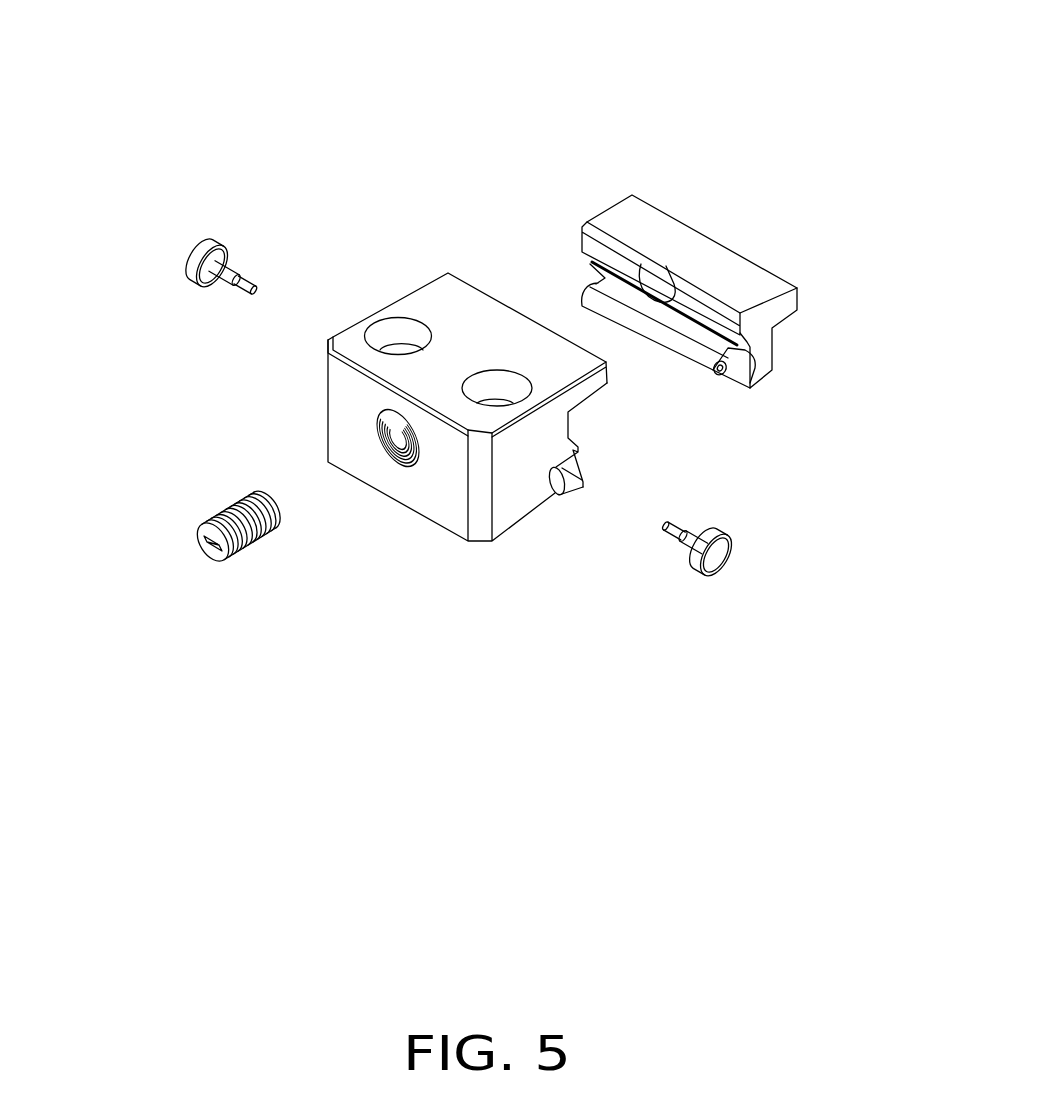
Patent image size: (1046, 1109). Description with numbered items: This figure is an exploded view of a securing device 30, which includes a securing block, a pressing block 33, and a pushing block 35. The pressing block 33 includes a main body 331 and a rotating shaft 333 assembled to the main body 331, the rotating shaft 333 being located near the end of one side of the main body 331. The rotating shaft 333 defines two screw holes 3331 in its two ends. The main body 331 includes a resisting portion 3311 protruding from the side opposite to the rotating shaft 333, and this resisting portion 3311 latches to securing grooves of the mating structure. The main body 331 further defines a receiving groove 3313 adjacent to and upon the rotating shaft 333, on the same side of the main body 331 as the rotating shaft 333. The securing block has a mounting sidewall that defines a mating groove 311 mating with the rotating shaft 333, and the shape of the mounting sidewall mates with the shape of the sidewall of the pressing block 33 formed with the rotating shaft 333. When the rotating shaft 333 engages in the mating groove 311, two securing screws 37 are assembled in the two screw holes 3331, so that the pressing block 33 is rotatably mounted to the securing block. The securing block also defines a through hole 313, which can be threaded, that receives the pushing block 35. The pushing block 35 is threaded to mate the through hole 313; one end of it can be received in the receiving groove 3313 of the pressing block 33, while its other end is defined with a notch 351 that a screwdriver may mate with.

The securing device 30 is at (492, 38).
The mating groove 311 is at (578, 488).
The through hole 313 is at (387, 448).
The pressing block 33 is at (754, 322).
The main body 331 is at (763, 358).
The resisting portion 3311 is at (787, 303).
The receiving groove 3313 is at (662, 277).
The rotating shaft 333 is at (727, 356).
The screw holes 3331 is at (713, 370).
The pushing block 35 is at (202, 560).
The notch 351 is at (202, 555).
The securing screws 37 is at (200, 257).